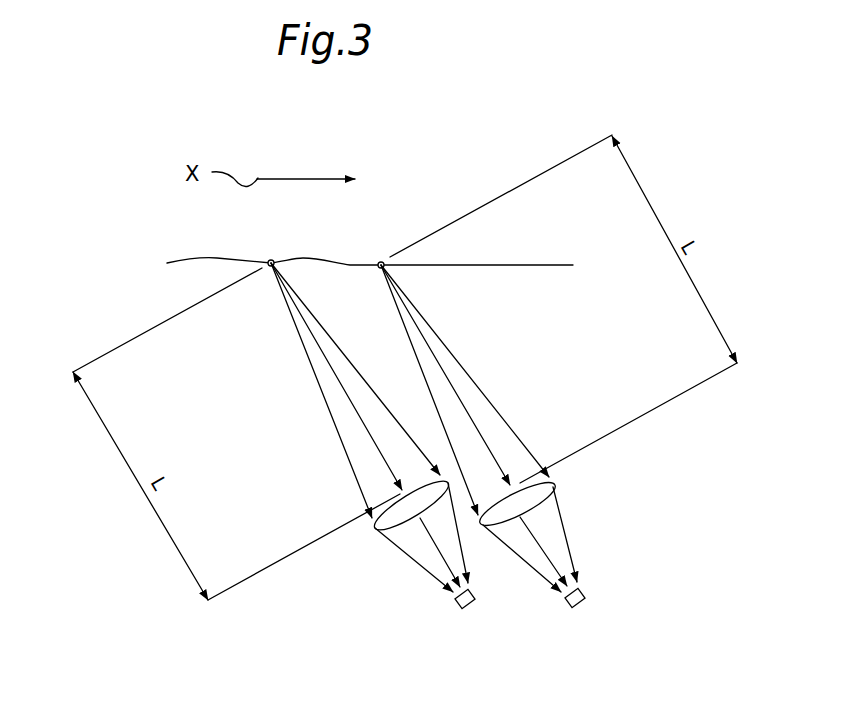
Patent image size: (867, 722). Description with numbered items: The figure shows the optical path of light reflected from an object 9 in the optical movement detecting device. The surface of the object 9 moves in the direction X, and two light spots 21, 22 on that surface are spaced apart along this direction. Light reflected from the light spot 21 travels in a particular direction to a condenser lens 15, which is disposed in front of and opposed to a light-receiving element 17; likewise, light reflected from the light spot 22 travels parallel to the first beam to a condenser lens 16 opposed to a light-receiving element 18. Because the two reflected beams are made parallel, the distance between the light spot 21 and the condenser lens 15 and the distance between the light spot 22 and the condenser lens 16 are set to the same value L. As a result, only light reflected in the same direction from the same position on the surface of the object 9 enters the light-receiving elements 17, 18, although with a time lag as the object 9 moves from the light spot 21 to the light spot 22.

The object 9 is at (545, 264).
The condenser lens 15 is at (375, 528).
The condenser lens 16 is at (557, 487).
The light-receiving element 17 is at (455, 606).
The light-receiving element 18 is at (588, 597).
The light spot 21 is at (271, 260).
The light spot 22 is at (380, 262).